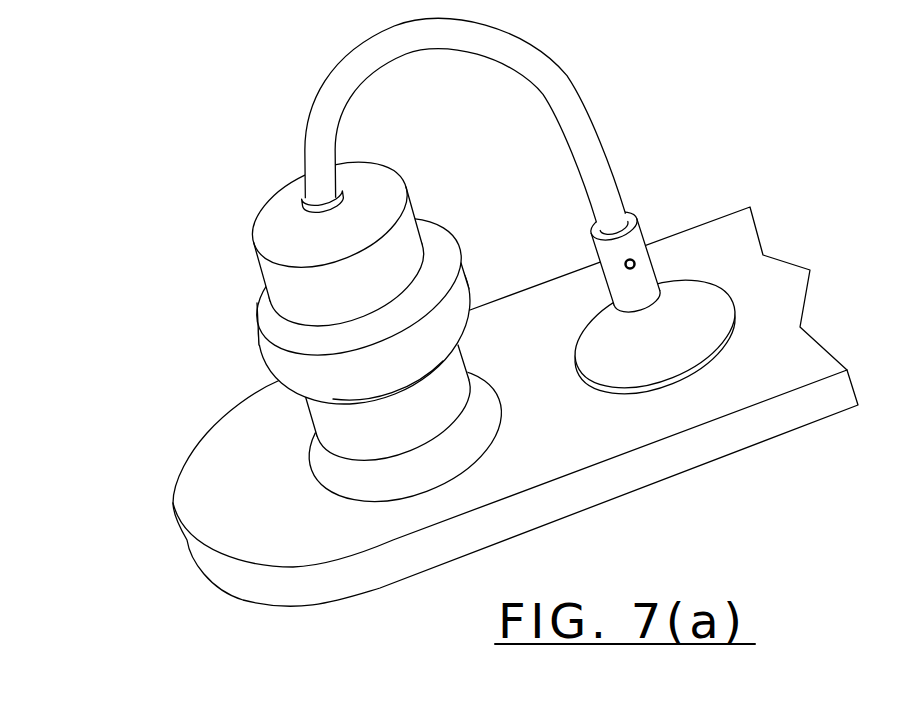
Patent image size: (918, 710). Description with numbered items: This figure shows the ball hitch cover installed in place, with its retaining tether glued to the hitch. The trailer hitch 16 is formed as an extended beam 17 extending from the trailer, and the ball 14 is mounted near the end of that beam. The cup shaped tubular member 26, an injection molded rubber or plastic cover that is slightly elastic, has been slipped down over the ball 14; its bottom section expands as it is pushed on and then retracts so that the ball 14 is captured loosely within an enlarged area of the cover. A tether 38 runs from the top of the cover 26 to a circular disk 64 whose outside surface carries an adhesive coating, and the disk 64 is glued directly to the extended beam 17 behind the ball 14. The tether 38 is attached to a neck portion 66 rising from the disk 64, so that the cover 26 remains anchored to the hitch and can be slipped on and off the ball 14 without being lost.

The trailer hitch 16 is at (165, 475).
The extended beam 17 is at (548, 351).
The ball 14 is at (473, 447).
The cup shaped tubular member 26 is at (240, 245).
The tether 38 is at (573, 68).
The circular disk 64 is at (673, 363).
The neck portion 66 is at (643, 280).